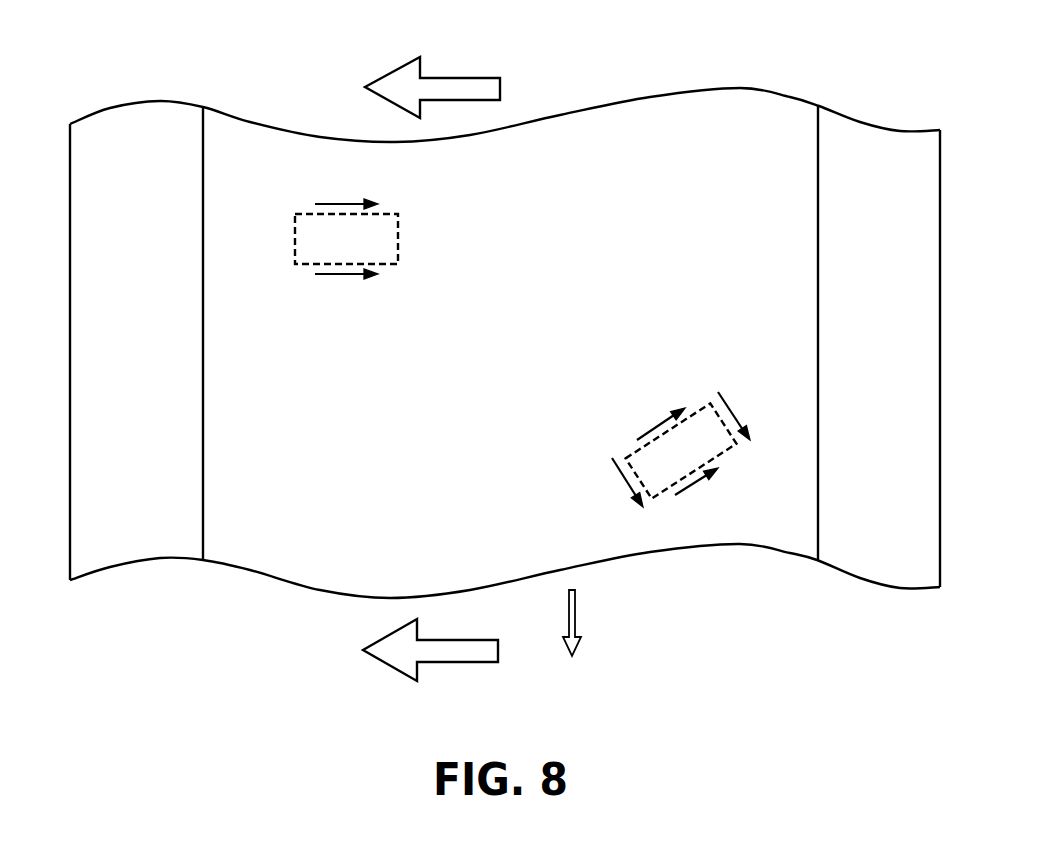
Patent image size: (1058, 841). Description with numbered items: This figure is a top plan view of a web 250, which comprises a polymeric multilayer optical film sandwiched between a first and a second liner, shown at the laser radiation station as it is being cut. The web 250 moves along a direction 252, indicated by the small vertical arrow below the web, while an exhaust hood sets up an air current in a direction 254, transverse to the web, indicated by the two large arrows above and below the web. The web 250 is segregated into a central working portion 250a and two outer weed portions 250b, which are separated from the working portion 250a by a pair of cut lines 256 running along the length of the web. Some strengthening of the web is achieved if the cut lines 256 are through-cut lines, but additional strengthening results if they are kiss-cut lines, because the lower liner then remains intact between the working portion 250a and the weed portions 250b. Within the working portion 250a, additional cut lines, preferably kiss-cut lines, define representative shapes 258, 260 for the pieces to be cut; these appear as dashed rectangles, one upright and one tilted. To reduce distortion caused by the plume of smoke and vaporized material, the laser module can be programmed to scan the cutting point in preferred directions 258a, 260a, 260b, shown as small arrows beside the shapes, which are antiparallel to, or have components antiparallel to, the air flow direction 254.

The web 250 is at (247, 612).
The central working portion 250a is at (538, 356).
The weed portions 250b is at (162, 356).
The direction 252 is at (578, 610).
The air current direction 254 is at (447, 77).
The cut lines 256 is at (203, 124).
The representative shape 258 is at (400, 238).
The preferred directions 258a is at (335, 203).
The representative shape 260 is at (728, 455).
The preferred directions 260a is at (652, 430).
The preferred directions 260b is at (728, 420).